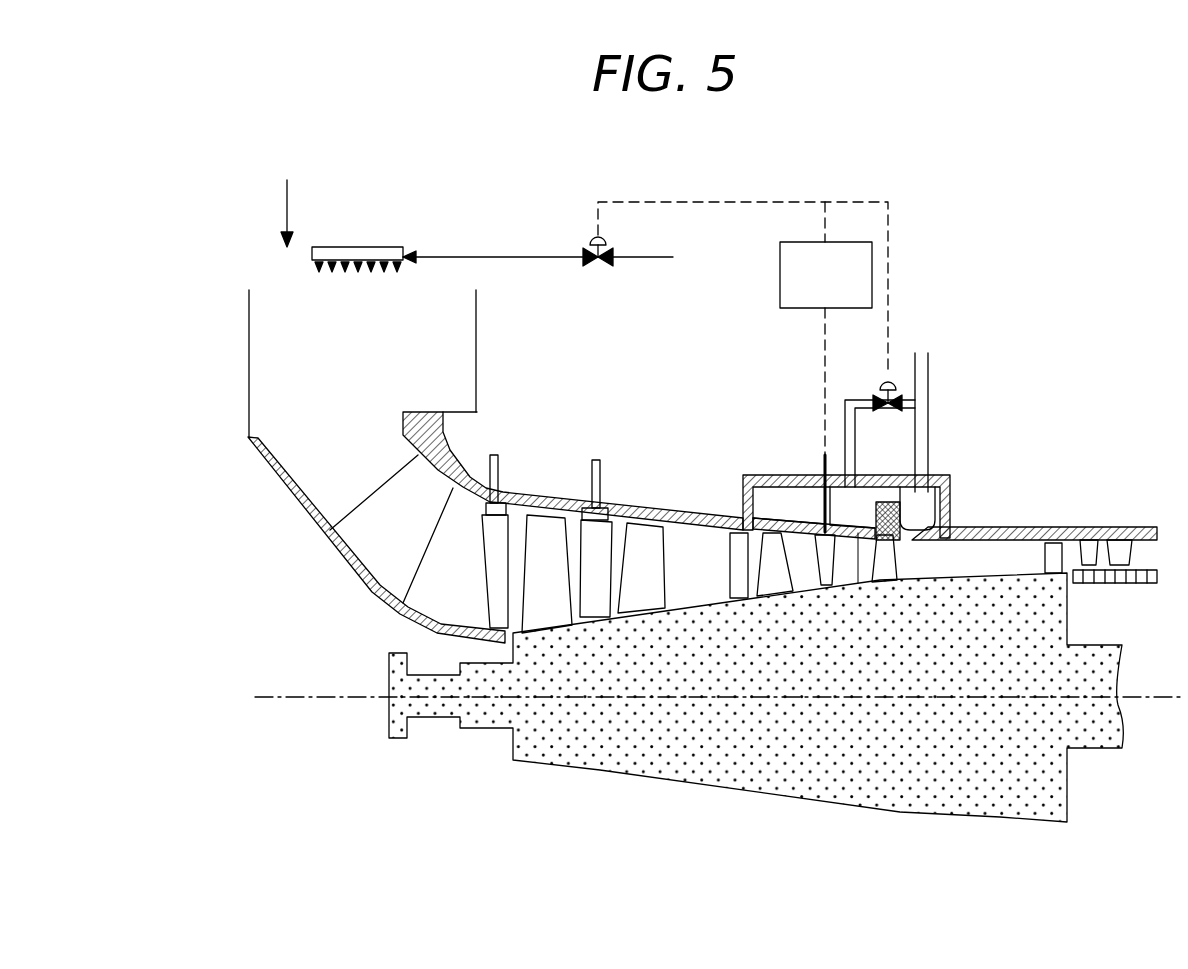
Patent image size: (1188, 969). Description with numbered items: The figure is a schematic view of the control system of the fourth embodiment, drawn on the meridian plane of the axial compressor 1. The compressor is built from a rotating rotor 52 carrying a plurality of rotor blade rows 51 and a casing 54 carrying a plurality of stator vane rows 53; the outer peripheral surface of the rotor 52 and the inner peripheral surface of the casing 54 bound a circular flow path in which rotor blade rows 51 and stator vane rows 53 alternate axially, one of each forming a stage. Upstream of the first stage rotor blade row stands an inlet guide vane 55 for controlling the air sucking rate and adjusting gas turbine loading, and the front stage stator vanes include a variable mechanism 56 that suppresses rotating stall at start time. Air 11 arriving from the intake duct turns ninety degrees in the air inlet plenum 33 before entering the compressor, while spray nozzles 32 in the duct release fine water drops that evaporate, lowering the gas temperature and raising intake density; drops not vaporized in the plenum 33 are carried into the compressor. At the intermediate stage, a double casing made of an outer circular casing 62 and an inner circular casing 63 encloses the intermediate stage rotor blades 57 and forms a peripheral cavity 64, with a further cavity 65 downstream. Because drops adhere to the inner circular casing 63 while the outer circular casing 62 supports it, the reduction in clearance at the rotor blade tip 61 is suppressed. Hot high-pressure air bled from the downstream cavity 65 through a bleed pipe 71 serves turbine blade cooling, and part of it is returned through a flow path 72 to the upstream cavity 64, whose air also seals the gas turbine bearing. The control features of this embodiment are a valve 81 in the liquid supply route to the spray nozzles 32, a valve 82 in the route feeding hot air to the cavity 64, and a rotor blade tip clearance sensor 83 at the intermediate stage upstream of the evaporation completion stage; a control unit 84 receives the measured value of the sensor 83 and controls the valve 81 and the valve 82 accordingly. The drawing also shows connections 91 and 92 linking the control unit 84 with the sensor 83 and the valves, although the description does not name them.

The axial compressor 1 is at (698, 833).
The air 11 is at (287, 195).
The spray nozzles 32 is at (403, 250).
The air inlet plenum 33 is at (248, 370).
The rotor blade rows 51 is at (547, 612).
The rotor 52 is at (912, 743).
The stator vane rows 53 is at (732, 555).
The casing 54 is at (703, 512).
The inlet guide vane 55 is at (490, 590).
The variable mechanism 56 is at (602, 470).
The intermediate stage rotor blades 57 is at (770, 595).
The rotor blade tip 61 is at (826, 598).
The outer circular casing 62 is at (780, 478).
The inner circular casing 63 is at (840, 532).
The cavity 64 is at (789, 509).
The cavity 65 is at (917, 508).
The bleed pipe 71 is at (930, 440).
The flow path 72 is at (855, 412).
The valve 81 is at (594, 245).
The valve 82 is at (885, 391).
The rotor blade tip clearance sensor 83 is at (825, 455).
The control unit 84 is at (780, 278).
The signal line 91 is at (825, 372).
The control signal line 92 is at (795, 202).